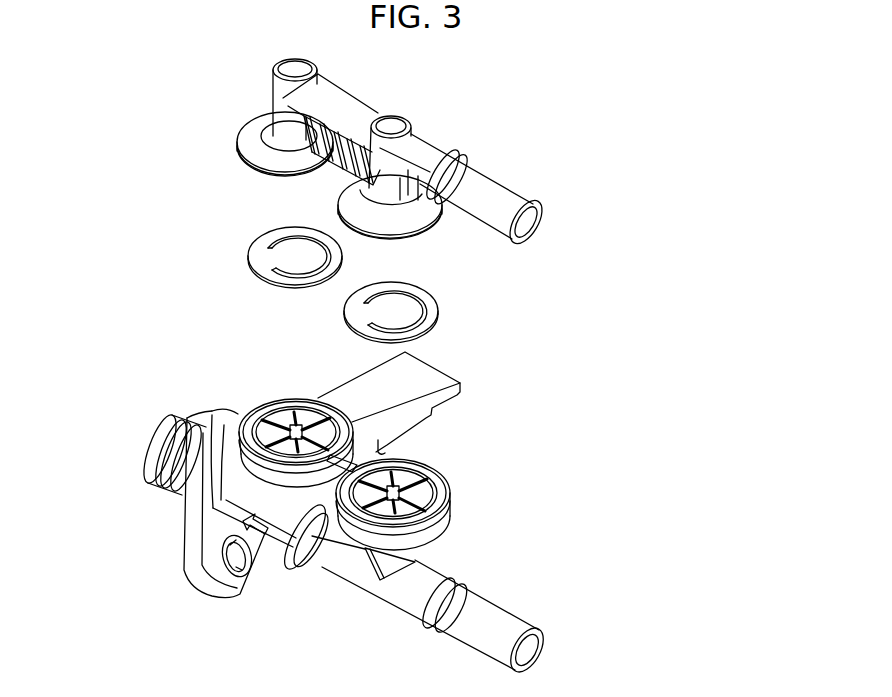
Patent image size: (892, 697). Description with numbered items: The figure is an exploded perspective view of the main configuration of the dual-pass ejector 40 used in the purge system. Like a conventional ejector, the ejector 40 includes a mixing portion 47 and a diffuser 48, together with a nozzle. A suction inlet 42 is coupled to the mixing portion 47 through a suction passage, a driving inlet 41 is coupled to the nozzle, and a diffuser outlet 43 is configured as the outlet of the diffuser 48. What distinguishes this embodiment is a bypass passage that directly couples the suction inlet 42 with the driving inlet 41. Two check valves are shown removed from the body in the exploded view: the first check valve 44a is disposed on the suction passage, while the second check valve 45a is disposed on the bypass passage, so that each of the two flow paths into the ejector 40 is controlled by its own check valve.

The dual-pass ejector 40 is at (414, 483).
The driving inlet 41 is at (498, 612).
The suction inlet 42 is at (516, 192).
The diffuser outlet 43 is at (173, 420).
The first check valve 44a is at (256, 246).
The second check valve 45a is at (438, 303).
The mixing portion 47 is at (278, 545).
The diffuser 48 is at (197, 437).